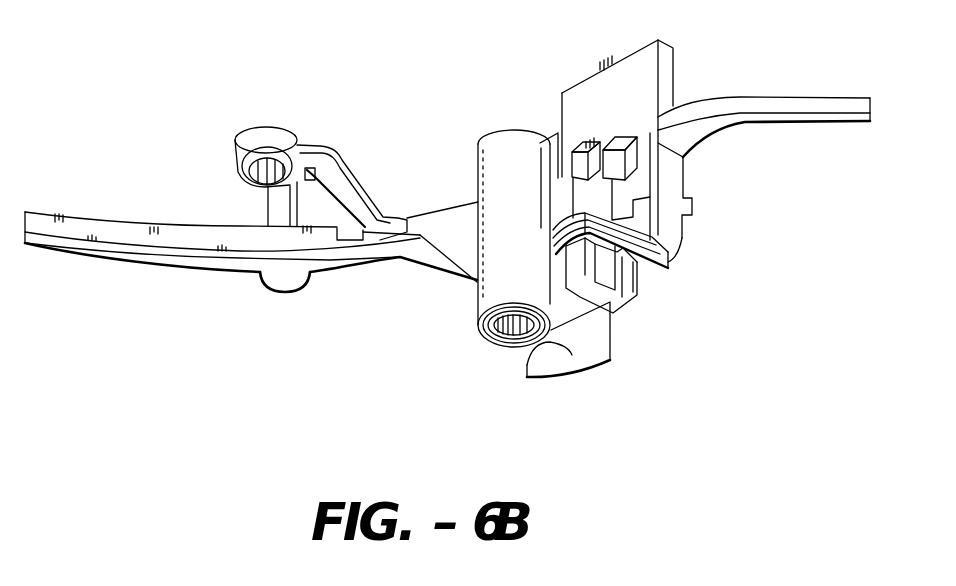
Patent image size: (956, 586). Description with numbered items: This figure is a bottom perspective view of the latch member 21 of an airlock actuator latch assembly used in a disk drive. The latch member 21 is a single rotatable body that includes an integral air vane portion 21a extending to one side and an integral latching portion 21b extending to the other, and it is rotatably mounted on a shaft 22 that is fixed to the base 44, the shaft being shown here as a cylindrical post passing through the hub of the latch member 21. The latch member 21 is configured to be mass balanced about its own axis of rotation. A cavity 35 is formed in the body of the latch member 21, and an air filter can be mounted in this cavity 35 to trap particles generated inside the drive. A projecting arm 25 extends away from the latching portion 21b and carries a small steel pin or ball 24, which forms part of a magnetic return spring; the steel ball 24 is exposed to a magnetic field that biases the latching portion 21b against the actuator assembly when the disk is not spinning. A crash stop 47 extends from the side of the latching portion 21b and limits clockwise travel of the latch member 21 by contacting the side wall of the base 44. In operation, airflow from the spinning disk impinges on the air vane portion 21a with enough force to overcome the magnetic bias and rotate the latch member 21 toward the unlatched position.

The latch member 21 is at (492, 49).
The air vane portion 21a is at (800, 105).
The latching portion 21b is at (100, 230).
The shaft 22 is at (515, 340).
The steel pin or ball 24 is at (266, 183).
The projecting arm 25 is at (357, 183).
The cavity 35 is at (628, 197).
The base 44 is at (623, 281).
The crash stop 47 is at (290, 293).